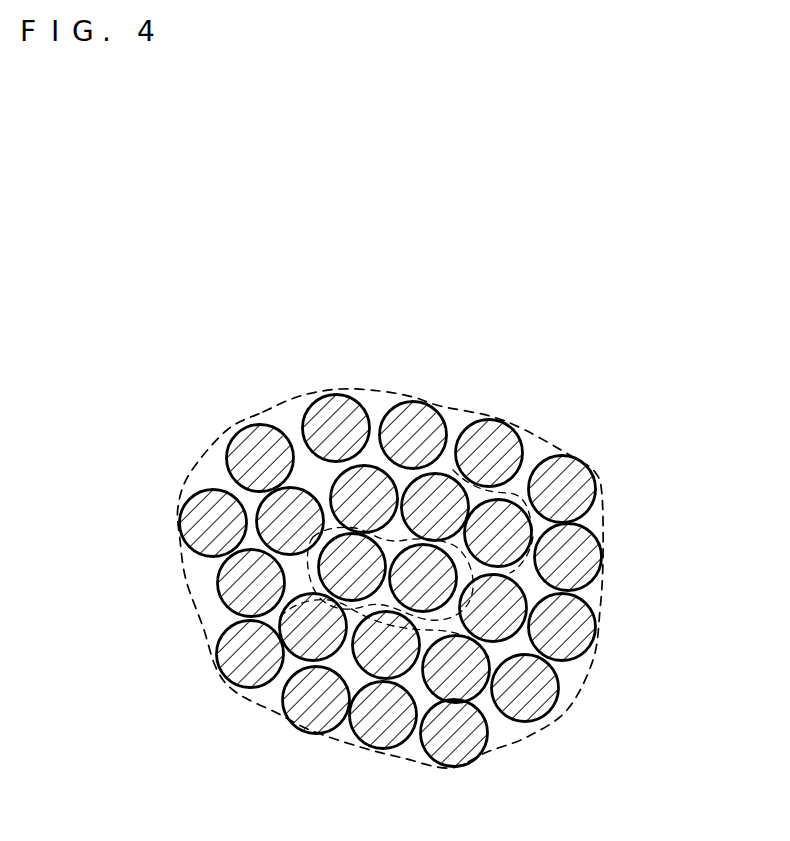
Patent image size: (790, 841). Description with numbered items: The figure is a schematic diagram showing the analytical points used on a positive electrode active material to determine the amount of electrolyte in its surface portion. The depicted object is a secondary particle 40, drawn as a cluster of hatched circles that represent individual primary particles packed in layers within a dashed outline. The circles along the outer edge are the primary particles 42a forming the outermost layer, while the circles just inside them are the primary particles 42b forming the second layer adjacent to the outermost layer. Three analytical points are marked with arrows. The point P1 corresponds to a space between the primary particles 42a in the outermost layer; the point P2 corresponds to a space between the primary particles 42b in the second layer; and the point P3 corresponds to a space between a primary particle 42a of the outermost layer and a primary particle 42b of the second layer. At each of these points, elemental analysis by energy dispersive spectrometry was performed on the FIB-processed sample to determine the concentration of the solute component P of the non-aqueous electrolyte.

The secondary particle 40 is at (403, 355).
The primary particles in the outermost layer 42a is at (331, 428).
The primary particles in the second layer 42b is at (227, 677).
The point P1 is at (493, 722).
The point P2 is at (502, 572).
The point P3 is at (535, 514).